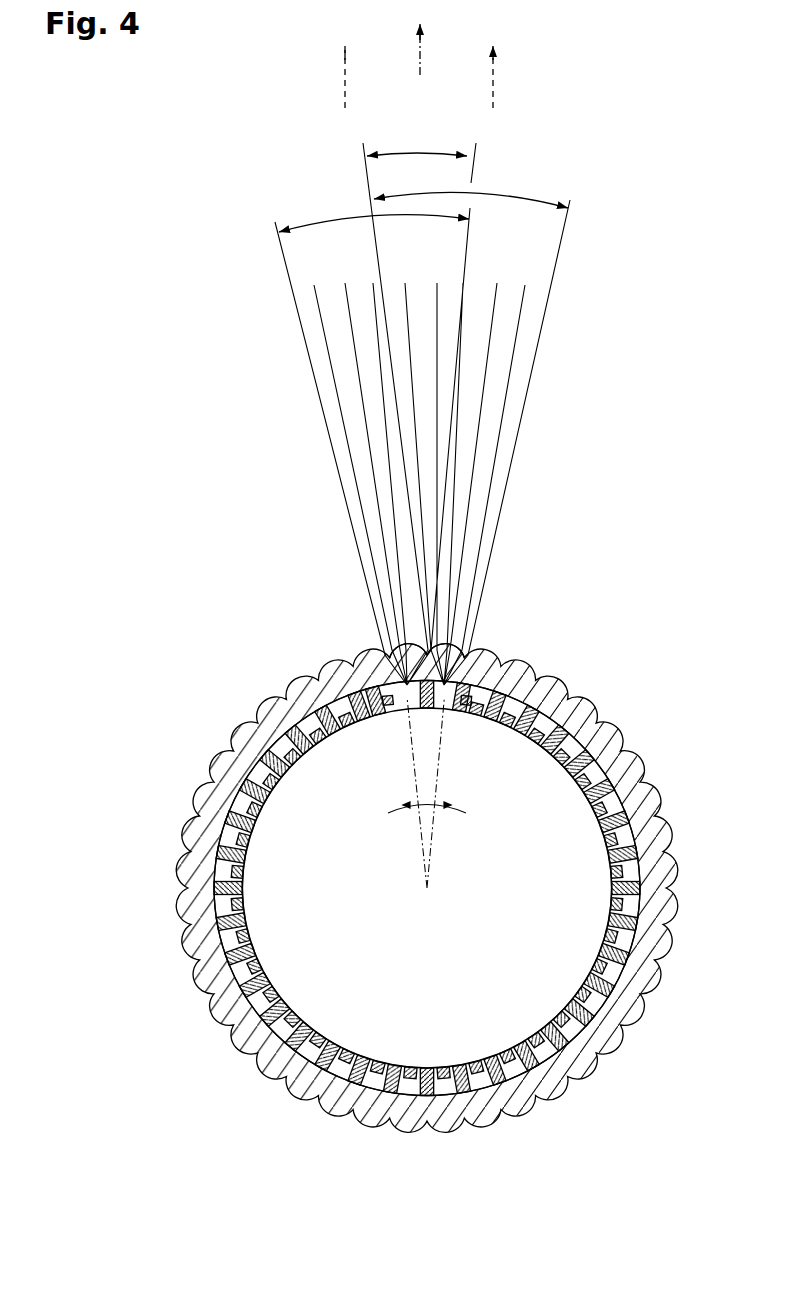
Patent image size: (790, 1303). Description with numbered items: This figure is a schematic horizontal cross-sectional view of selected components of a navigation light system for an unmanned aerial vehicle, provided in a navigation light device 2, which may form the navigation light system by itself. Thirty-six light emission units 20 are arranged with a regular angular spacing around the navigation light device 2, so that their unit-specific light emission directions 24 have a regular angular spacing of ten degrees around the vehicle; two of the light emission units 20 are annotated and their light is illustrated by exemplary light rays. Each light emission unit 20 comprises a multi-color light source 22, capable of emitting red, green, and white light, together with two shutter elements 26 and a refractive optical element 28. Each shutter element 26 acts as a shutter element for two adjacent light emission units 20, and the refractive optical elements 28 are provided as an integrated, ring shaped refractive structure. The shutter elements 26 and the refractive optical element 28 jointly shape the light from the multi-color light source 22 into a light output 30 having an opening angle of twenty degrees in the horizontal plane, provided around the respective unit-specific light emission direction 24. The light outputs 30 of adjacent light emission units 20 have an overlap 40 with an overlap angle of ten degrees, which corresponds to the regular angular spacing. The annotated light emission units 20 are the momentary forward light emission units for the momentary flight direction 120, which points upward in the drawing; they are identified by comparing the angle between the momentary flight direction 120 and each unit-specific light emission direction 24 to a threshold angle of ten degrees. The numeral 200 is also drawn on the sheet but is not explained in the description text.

The navigation light device 2 is at (641, 726).
The light emission unit 20 is at (421, 400).
The multi-color light source 22 is at (404, 709).
The unit-specific light emission direction 24 is at (344, 92).
The shutter element 26 is at (378, 659).
The refractive optical element 28 is at (397, 635).
The light output 30 is at (326, 385).
The overlap 40 is at (425, 400).
The momentary flight direction 120 is at (430, 47).
The tubular body 200 is at (395, 856).